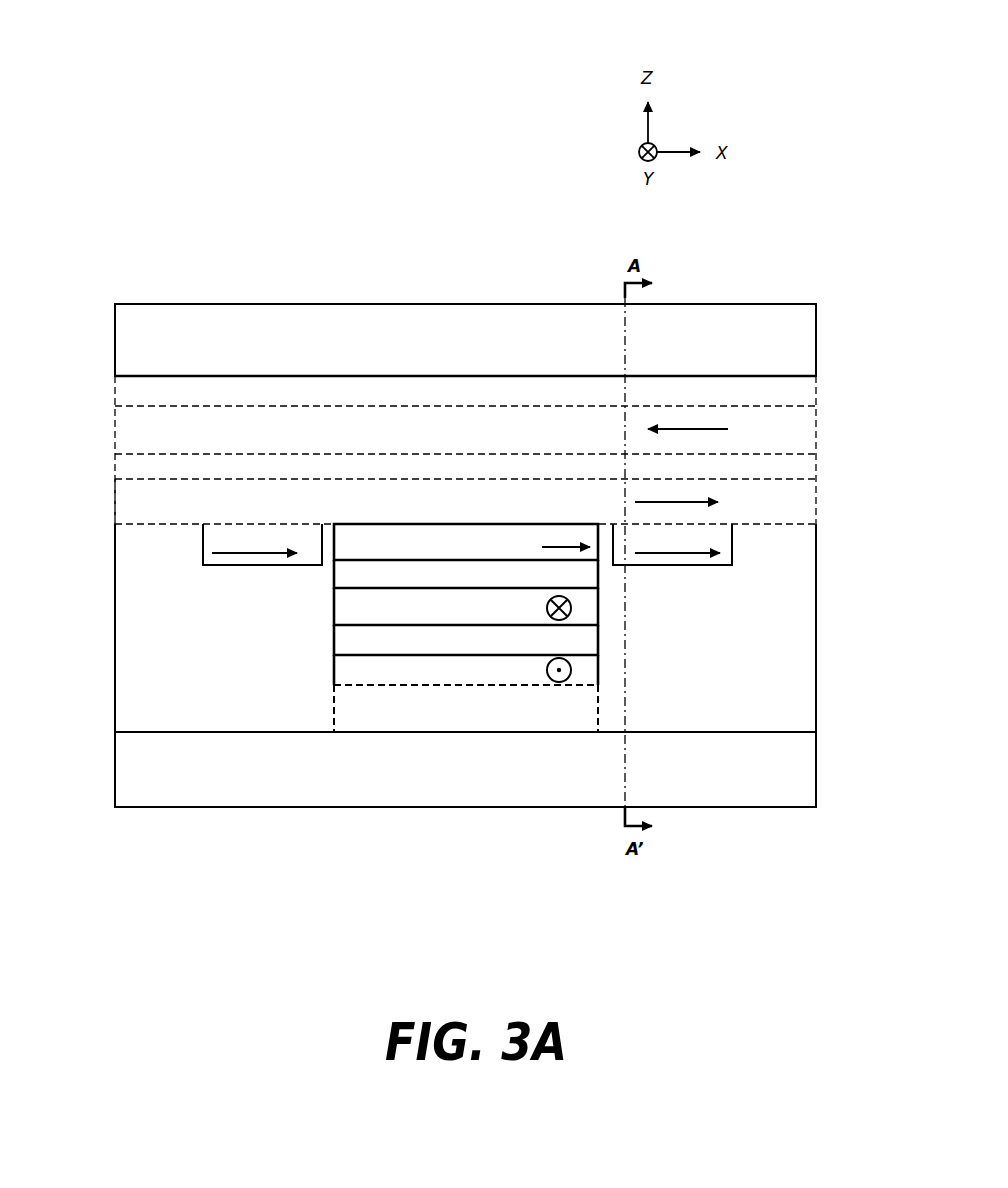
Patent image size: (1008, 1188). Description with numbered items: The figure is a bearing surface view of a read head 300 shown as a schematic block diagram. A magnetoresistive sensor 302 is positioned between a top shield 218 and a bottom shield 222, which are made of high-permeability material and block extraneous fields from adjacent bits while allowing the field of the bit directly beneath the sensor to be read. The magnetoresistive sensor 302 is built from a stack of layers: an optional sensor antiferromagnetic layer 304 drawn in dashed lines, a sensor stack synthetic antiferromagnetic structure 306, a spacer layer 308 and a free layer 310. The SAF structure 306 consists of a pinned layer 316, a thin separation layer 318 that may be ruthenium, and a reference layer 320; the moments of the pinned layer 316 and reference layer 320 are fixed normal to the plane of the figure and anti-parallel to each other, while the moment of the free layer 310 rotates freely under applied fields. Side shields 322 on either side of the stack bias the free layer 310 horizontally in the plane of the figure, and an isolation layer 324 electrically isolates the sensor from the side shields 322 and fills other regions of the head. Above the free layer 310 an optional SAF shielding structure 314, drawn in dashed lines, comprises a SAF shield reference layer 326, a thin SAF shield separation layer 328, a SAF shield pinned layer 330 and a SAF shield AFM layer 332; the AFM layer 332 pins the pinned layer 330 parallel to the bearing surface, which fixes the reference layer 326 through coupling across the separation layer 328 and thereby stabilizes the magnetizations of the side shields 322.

The read head 300 is at (417, 196).
The magnetoresistive sensor 302 is at (846, 603).
The sensor antiferromagnetic (AFM) layer 304 is at (466, 708).
The sensor stack synthetic antiferromagnetic (SAF) structure 306 is at (606, 600).
The spacer layer 308 is at (466, 574).
The free layer 310 is at (466, 542).
The SAF shielding structure 314 is at (97, 377).
The pinned layer 316 is at (466, 670).
The separation layer 318 is at (466, 640).
The reference layer 320 is at (466, 606).
The side shields 322 is at (467, 544).
The isolation layer 324 is at (327, 550).
The SAF shield reference layer 326 is at (416, 501).
The SAF shield separation layer 328 is at (465, 468).
The SAF shield pinned layer 330 is at (465, 438).
The SAF shield AFM layer 332 is at (465, 394).
The top shield 218 is at (465, 340).
The bottom shield 222 is at (465, 754).